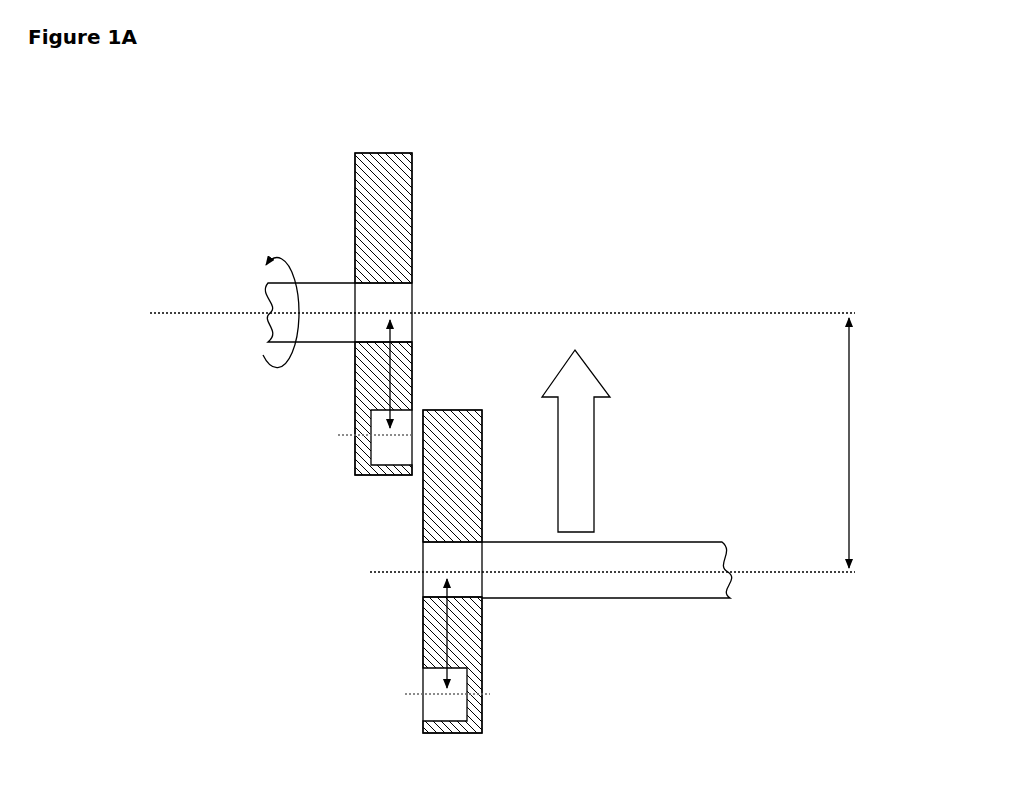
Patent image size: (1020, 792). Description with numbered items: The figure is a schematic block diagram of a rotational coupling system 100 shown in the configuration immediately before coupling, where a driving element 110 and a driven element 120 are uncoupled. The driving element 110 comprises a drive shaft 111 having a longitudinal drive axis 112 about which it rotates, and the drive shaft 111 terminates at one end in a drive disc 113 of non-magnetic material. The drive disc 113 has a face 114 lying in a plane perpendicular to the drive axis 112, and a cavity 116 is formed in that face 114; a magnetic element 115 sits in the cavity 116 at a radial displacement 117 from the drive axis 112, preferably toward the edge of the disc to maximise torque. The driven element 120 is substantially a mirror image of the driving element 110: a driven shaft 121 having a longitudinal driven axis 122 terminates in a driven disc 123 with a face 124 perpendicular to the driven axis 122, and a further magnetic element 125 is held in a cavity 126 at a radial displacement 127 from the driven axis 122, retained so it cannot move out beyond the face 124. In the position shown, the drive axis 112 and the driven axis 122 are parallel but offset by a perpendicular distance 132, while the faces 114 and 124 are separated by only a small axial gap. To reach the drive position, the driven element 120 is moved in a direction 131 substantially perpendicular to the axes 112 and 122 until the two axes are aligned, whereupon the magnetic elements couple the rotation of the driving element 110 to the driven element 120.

The rotational coupling system 100 is at (651, 172).
The driving element 110 is at (294, 205).
The drive shaft 111 is at (323, 333).
The drive axis 112 is at (188, 306).
The drive disc 113 is at (412, 160).
The face 114 is at (418, 217).
The magnetic element 115 is at (392, 455).
The cavity 116 is at (354, 461).
The radial displacement 117 is at (398, 378).
The driven element 120 is at (628, 690).
The driven shaft 121 is at (655, 548).
The driven axis 122 is at (783, 580).
The driven disc 123 is at (481, 410).
The face 124 is at (416, 622).
The further magnetic element 125 is at (432, 708).
The cavity 126 is at (480, 710).
The radial displacement 127 is at (460, 643).
The direction 131 is at (613, 432).
The perpendicular distance 132 is at (881, 417).